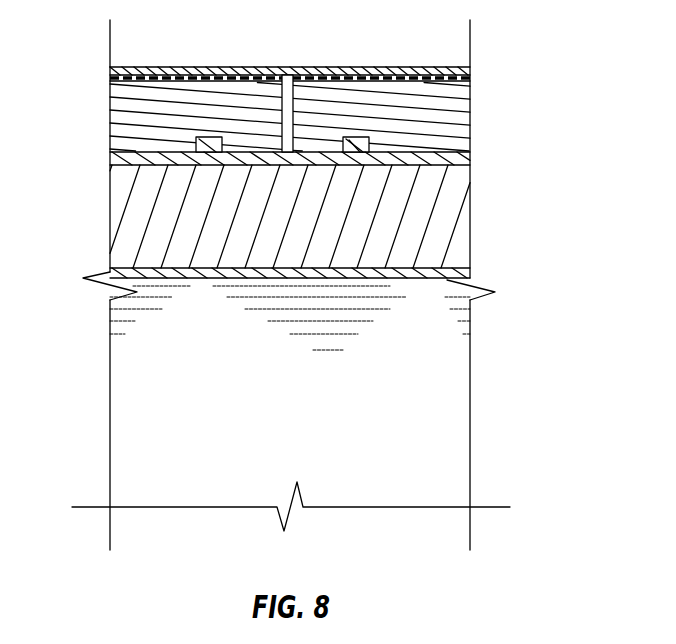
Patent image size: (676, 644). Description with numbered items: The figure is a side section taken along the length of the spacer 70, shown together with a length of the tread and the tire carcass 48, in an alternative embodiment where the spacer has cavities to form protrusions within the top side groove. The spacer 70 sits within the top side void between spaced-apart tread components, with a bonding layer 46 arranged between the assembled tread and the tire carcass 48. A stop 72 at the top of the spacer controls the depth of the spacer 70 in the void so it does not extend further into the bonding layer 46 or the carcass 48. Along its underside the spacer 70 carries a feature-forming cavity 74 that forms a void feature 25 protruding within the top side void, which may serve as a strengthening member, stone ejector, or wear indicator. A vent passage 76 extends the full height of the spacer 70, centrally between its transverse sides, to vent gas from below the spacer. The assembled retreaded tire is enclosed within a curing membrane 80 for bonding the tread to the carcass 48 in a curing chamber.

The void feature 25 is at (343, 165).
The bonding layer 46 is at (458, 151).
The tire carcass 48 is at (457, 199).
The spacer 70 is at (463, 98).
The stop 72 is at (427, 70).
The feature-forming cavity 74 is at (203, 136).
The vent passage 76 is at (294, 76).
The curing membrane 80 is at (360, 67).